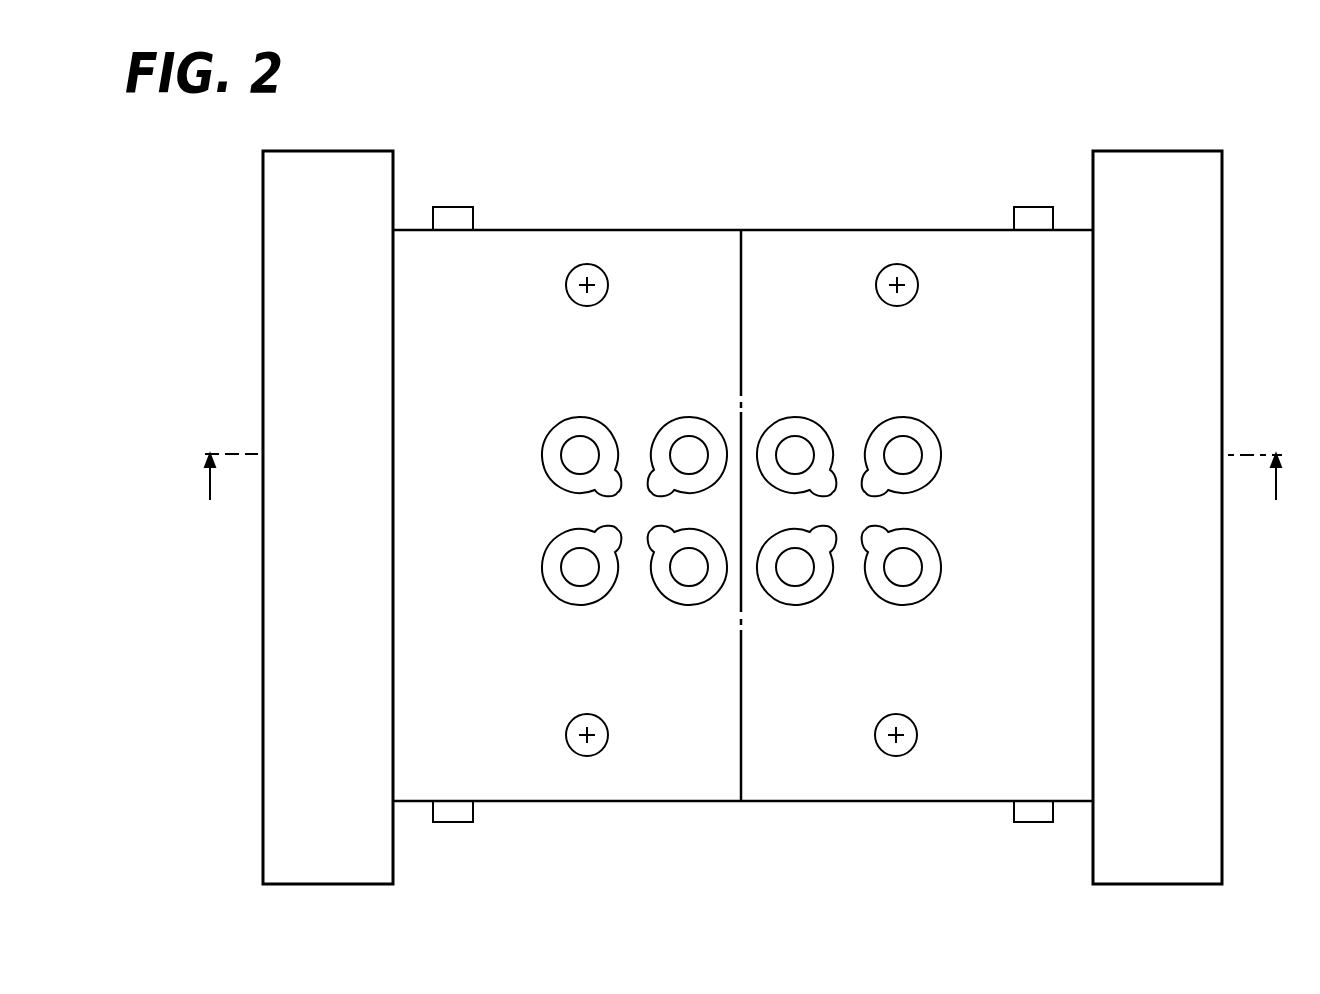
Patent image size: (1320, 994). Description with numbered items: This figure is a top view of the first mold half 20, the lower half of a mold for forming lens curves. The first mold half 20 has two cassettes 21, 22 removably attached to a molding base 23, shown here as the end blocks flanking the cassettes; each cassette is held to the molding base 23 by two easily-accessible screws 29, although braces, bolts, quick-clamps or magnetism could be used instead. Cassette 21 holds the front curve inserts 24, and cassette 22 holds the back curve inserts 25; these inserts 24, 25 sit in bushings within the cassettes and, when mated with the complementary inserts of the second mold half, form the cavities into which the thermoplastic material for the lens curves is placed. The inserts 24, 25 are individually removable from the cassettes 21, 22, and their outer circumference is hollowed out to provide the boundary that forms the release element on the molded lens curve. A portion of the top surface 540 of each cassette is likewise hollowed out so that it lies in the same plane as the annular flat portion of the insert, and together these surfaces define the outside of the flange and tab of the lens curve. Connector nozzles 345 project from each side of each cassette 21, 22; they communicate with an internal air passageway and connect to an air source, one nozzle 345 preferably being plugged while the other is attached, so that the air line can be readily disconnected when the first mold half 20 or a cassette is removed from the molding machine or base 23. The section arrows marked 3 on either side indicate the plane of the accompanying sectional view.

The first mold half 20 is at (808, 125).
The cassette 21 is at (665, 247).
The cassette 22 is at (817, 247).
The molding base 23 is at (1205, 263).
The front curve inserts 24 is at (675, 432).
The back curve inserts 25 is at (890, 432).
The screws 29 is at (580, 268).
The connector nozzles 345 is at (454, 220).
The top surface of the cassette 540 is at (1073, 660).
The section line 3- 3 is at (743, 493).